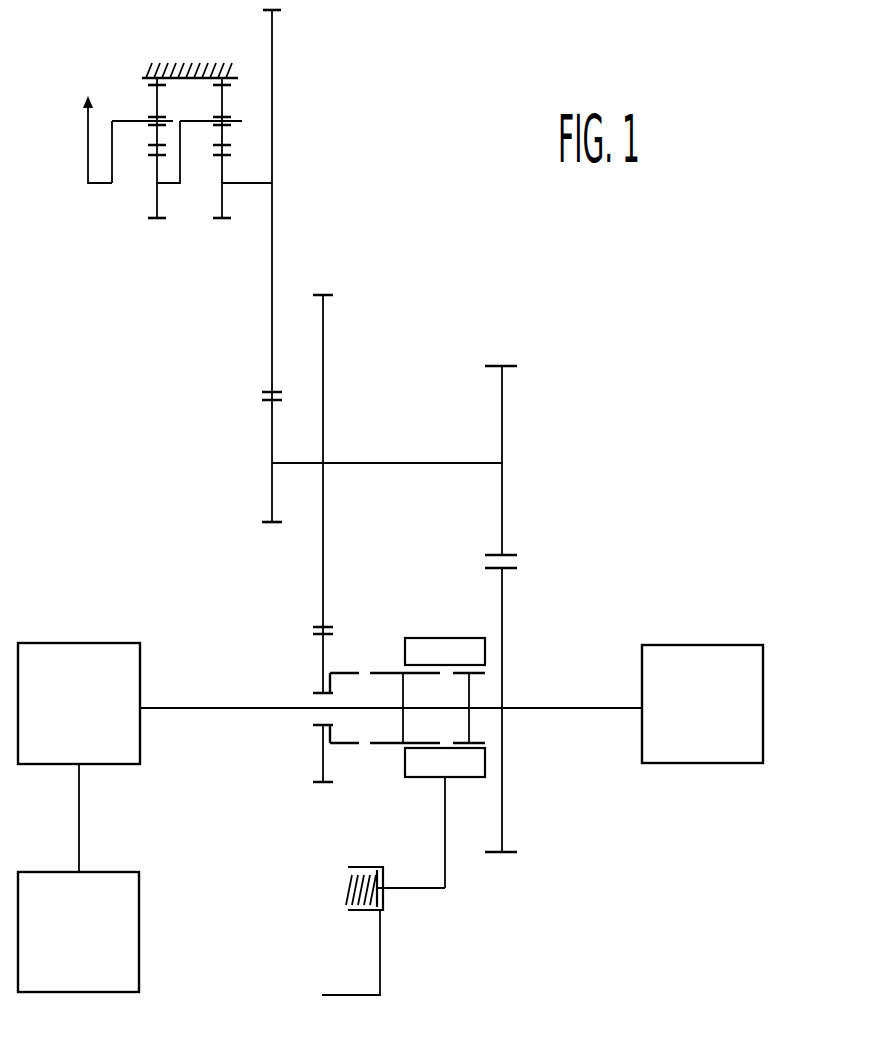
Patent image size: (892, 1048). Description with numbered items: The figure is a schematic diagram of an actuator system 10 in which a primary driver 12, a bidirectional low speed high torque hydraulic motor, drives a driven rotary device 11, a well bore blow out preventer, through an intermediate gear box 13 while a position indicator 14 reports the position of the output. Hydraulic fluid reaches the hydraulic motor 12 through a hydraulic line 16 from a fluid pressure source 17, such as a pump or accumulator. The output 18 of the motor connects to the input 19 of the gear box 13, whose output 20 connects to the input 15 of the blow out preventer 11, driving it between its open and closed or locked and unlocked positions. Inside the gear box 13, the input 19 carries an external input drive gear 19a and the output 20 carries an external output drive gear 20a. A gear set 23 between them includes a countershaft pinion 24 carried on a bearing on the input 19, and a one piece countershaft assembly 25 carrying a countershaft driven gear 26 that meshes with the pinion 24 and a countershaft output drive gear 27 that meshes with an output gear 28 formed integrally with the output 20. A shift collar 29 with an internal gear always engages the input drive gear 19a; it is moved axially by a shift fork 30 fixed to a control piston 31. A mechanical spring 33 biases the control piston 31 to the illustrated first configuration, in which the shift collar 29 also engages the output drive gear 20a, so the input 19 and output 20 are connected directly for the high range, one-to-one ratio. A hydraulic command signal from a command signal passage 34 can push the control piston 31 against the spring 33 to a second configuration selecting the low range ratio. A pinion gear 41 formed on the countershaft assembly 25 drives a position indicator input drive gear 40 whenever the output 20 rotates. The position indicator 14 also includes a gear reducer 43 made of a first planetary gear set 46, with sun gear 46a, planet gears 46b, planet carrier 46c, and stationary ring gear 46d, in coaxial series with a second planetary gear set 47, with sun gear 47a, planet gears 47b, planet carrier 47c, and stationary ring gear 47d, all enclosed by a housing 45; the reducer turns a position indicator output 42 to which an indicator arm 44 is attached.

The actuator system and method 10 is at (502, 118).
The driven rotary device 11 is at (735, 645).
The primary driver 12 is at (80, 643).
The gear box 13 is at (458, 301).
The position indicator 14 is at (283, 72).
The input 15 is at (630, 706).
The hydraulic line 16 is at (79, 840).
The fluid pressure source 17 is at (140, 957).
The output 18 is at (163, 706).
The input 19 is at (308, 706).
The external input drive gear 19a is at (425, 740).
The output 20 is at (518, 706).
The external output drive gear 20a is at (462, 742).
The gear set 23 is at (363, 753).
The countershaft pinion 24 is at (348, 672).
The countershaft assembly 25 is at (405, 462).
The countershaft driven gear 26 is at (323, 625).
The countershaft output drive gear 27 is at (505, 550).
The output gear 28 is at (505, 572).
The shift collar 29 is at (427, 778).
The shift fork 30 is at (445, 830).
The control piston 31 is at (385, 886).
The mechanical spring 33 is at (365, 878).
The command signal passage 34 is at (381, 930).
The position indicator input drive gear 40 is at (271, 390).
The pinion gear 41 is at (272, 524).
The position indicator output 42 is at (112, 118).
The position indicator gear reducer 43 is at (187, 101).
The indicator arm 44 is at (88, 140).
The housing 45 is at (170, 72).
The first position indicator planetary gear set 46 is at (224, 236).
The sun gear 46a is at (222, 203).
The planet gears 46b is at (224, 102).
The planet carrier 46c is at (238, 124).
The stationary ring gear 46d is at (232, 75).
The second position indicator planetary gear set 47 is at (157, 236).
The sun gear 47a is at (153, 202).
The planet gears 47b is at (155, 102).
The planet carrier 47c is at (137, 124).
The stationary ring gear 47d is at (152, 76).